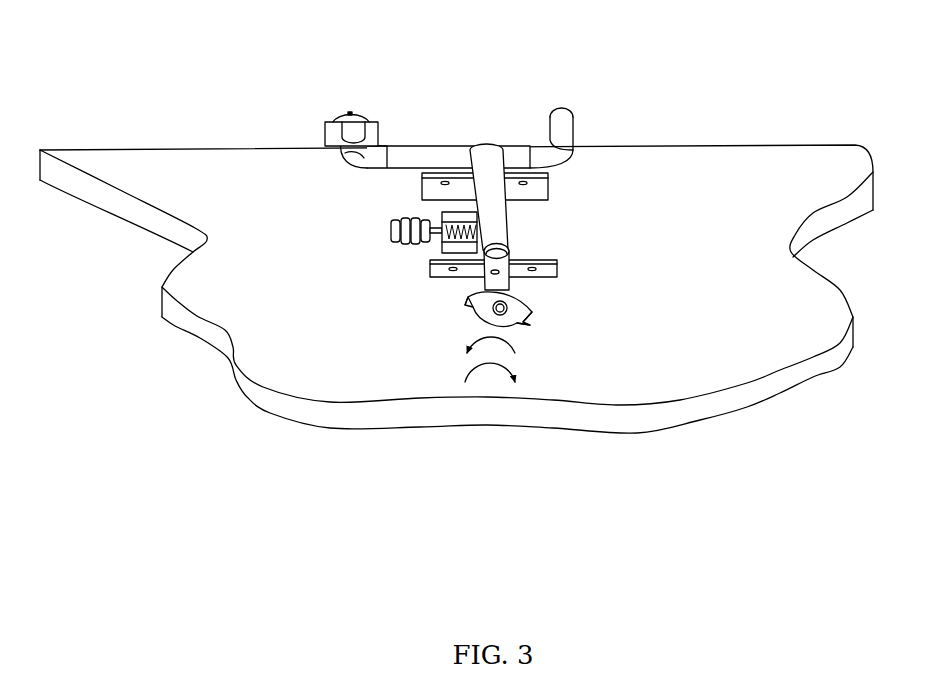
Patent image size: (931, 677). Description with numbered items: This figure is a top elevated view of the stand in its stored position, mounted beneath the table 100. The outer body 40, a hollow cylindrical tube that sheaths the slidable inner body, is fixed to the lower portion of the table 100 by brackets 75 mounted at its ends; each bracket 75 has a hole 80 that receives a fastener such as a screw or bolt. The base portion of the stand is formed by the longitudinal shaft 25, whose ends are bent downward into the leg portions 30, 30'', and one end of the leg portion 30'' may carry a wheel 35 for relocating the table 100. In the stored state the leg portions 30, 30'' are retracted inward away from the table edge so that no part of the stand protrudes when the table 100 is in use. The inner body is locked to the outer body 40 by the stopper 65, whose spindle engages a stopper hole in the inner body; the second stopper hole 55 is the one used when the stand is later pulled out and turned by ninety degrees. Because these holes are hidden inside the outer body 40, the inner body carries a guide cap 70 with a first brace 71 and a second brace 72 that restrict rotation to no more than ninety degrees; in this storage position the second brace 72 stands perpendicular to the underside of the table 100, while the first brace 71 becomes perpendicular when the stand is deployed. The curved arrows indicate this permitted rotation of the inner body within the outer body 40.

The shaft 25 is at (440, 155).
The leg portion 30 is at (591, 119).
The leg portion 30'' is at (323, 160).
The wheel 35 is at (332, 112).
The outer body 40 is at (495, 218).
The second stopper hole 55 is at (493, 273).
The stopper 65 is at (388, 225).
The guide cap 70 is at (485, 331).
The first brace 71 is at (463, 307).
The second brace 72 is at (527, 332).
The bracket 75 is at (535, 218).
The hole 80 is at (533, 262).
The table 100 is at (672, 318).